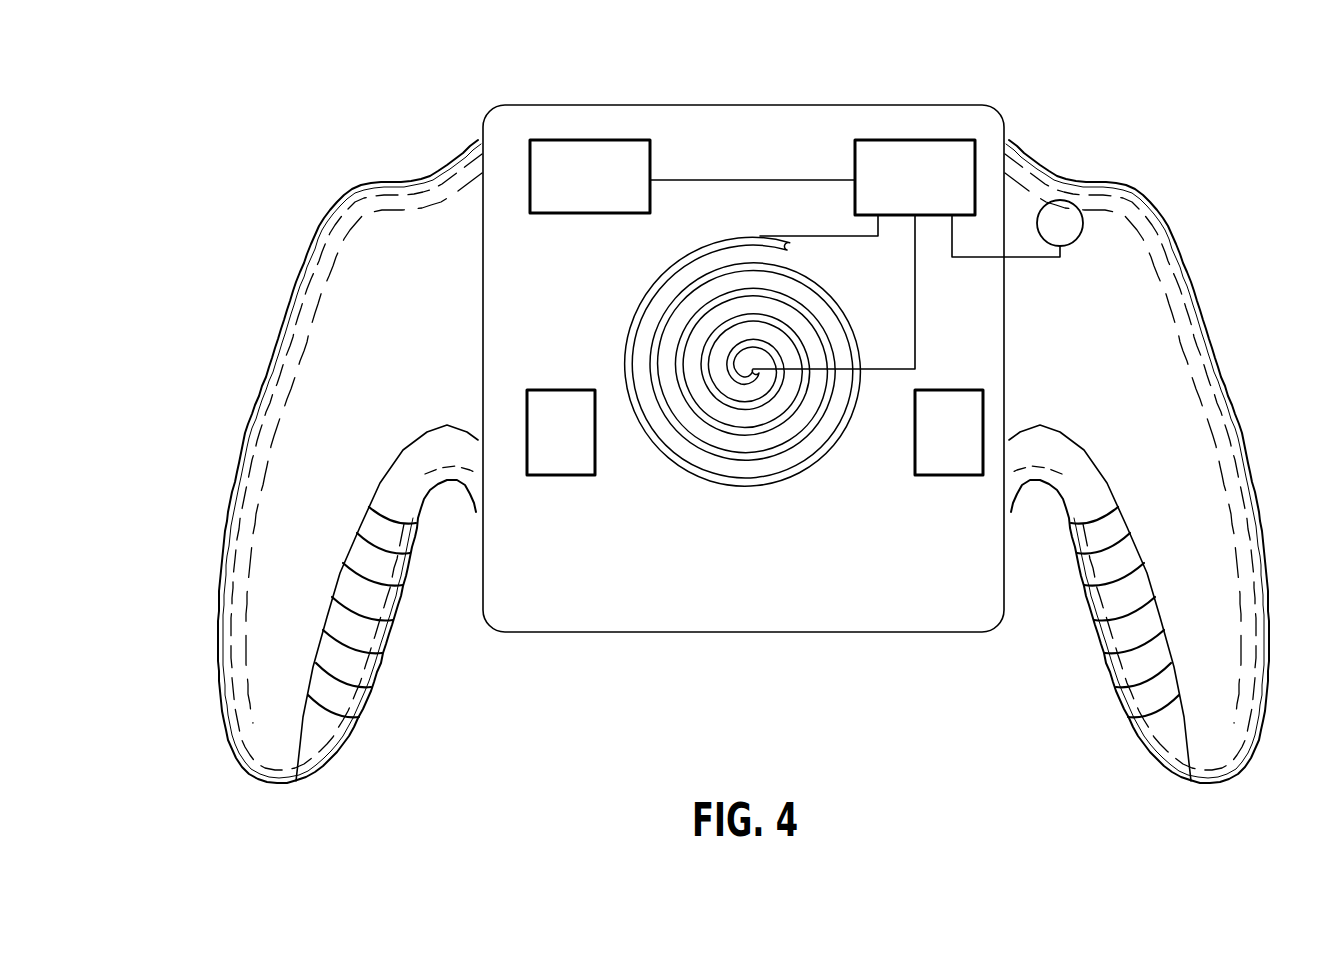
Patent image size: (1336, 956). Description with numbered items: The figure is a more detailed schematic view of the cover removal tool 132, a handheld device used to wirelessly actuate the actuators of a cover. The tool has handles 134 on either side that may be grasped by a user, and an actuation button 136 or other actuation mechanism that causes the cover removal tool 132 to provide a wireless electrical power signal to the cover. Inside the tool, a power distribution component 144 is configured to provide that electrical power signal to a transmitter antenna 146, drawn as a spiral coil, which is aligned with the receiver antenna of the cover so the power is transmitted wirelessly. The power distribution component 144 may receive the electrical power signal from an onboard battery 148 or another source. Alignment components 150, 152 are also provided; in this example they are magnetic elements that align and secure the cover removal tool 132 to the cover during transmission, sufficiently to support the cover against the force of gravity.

The cover removal tool 132 is at (270, 141).
The handle 134 is at (282, 493).
The actuation button 136 is at (1085, 222).
The power distribution component 144 is at (918, 140).
The transmitter antenna 146 is at (733, 491).
The onboard battery 148 is at (597, 140).
The alignment component 150 is at (950, 477).
The sensor module 152 is at (558, 477).